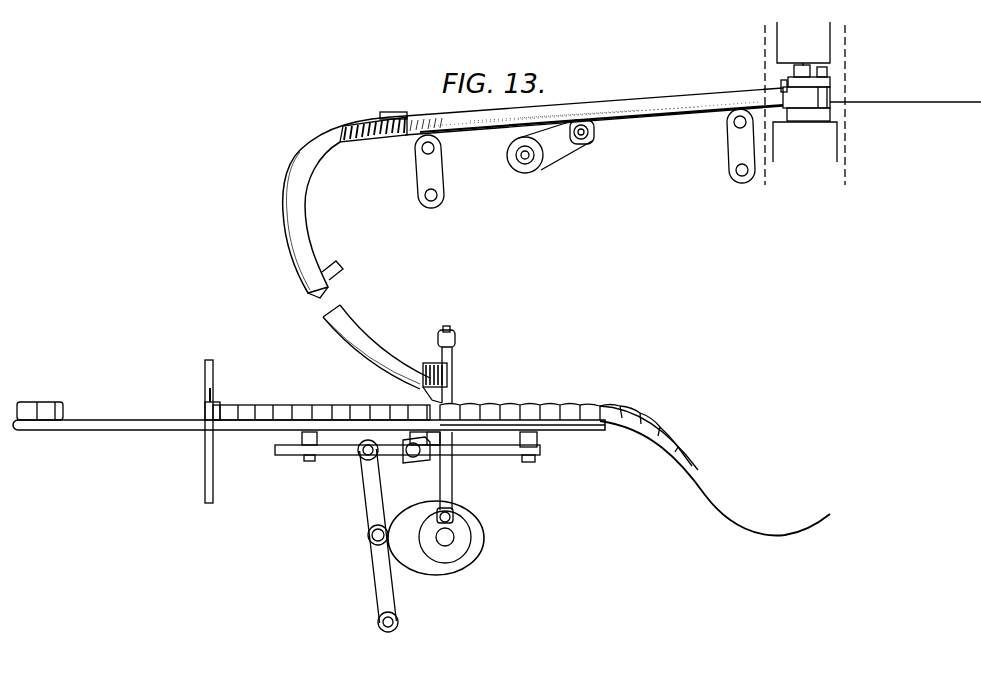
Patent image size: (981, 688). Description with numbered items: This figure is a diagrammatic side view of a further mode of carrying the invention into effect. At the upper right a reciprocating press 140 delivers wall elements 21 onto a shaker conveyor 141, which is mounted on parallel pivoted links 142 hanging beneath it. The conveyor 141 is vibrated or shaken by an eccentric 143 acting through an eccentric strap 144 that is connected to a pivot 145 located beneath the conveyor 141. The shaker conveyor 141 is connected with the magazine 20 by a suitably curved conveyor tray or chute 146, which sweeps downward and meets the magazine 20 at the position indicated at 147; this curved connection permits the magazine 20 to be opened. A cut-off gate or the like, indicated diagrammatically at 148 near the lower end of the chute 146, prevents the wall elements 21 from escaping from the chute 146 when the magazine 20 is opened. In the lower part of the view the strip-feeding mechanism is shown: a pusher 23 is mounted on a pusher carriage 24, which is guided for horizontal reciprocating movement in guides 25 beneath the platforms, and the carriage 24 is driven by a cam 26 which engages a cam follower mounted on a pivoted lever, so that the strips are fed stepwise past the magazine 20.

The magazine 20 is at (363, 358).
The wall elements 21 is at (356, 122).
The pusher 23 is at (400, 444).
The pusher carriage 24 is at (487, 452).
The guides 25 is at (307, 462).
The cam 26 is at (413, 558).
The reciprocating press 140 is at (830, 70).
The shaker conveyor 141 is at (628, 110).
The parallel pivoted links 142 is at (436, 175).
The eccentric 143 is at (530, 163).
The eccentric strap 144 is at (562, 147).
The pivot 145 is at (588, 135).
The curved conveyor tray or chute 146 is at (324, 141).
The position where chute meets magazine 147 is at (318, 291).
The cut-off gate 148 is at (343, 262).